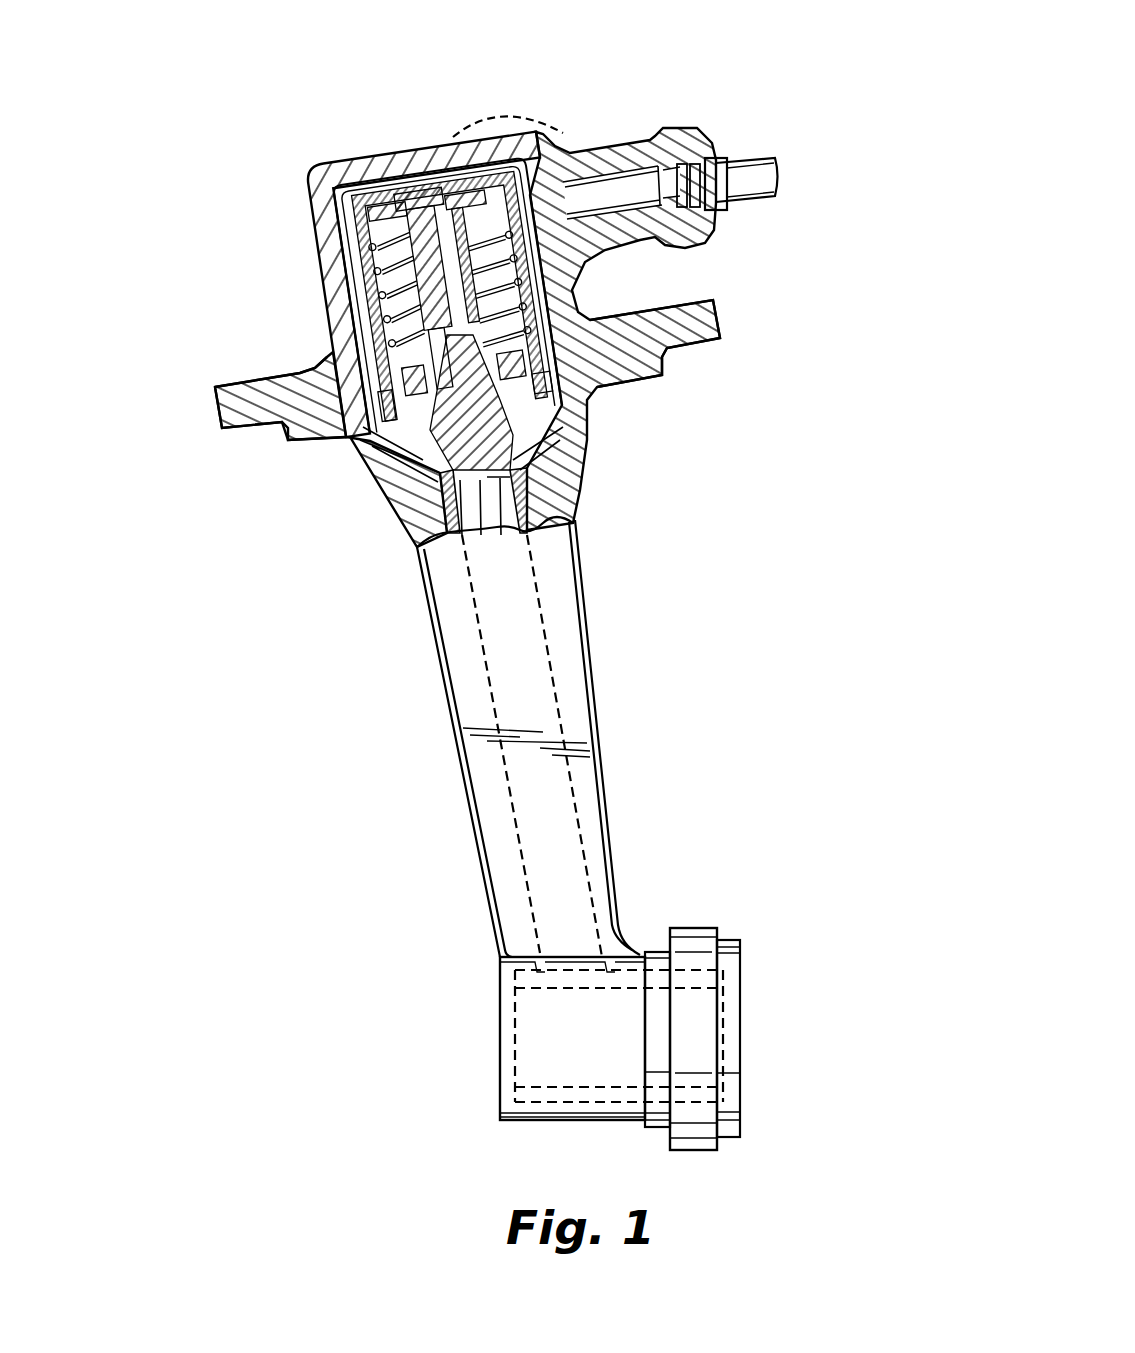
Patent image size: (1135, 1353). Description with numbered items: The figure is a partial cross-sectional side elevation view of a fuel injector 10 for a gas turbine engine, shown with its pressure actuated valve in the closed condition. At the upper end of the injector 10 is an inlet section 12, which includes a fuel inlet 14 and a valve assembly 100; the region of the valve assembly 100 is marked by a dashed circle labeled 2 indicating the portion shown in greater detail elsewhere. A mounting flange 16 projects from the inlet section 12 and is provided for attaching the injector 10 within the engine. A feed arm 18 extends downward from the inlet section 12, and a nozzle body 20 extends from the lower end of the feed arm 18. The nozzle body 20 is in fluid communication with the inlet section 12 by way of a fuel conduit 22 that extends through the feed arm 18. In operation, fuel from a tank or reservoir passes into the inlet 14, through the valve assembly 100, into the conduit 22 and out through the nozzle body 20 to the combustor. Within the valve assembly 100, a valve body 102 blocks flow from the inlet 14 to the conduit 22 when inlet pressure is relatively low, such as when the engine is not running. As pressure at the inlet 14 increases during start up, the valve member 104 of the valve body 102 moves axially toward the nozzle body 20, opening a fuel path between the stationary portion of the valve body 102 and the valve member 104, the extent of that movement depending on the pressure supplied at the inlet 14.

The fuel injector 10 is at (338, 100).
The inlet section 12 is at (347, 232).
The detail section 2 is at (560, 125).
The fuel inlet 14 is at (747, 167).
The mounting flange 16 is at (713, 320).
The feed arm 18 is at (593, 645).
The nozzle body 20 is at (697, 930).
The fuel conduit 22 is at (528, 493).
The valve assembly 100 is at (360, 278).
The valve body 102 is at (392, 433).
The valve member 104 is at (443, 480).